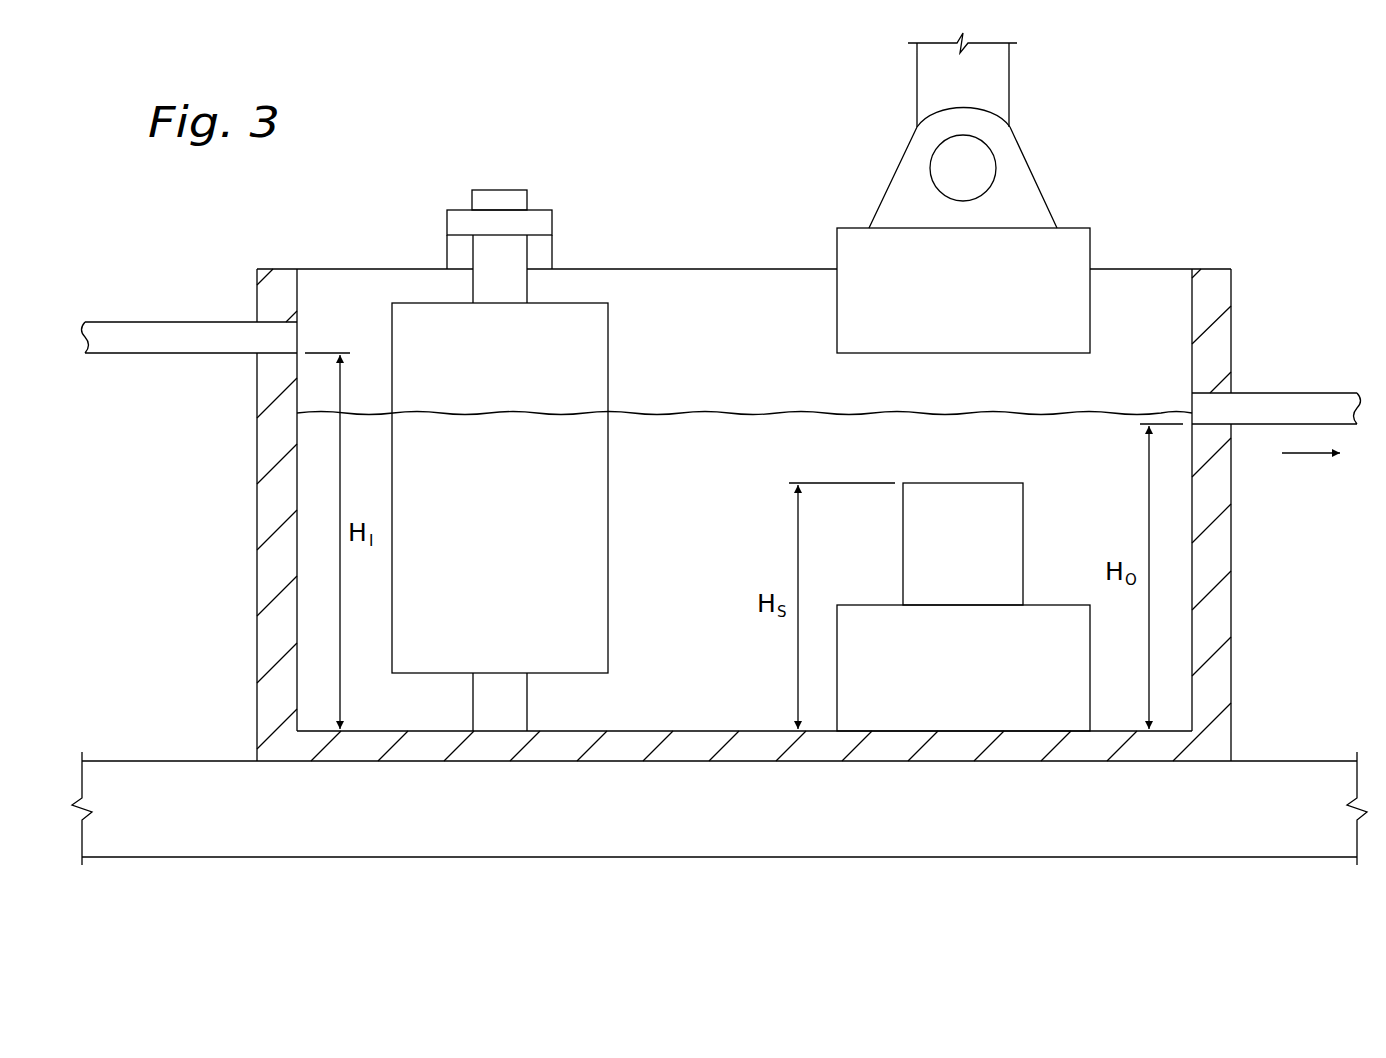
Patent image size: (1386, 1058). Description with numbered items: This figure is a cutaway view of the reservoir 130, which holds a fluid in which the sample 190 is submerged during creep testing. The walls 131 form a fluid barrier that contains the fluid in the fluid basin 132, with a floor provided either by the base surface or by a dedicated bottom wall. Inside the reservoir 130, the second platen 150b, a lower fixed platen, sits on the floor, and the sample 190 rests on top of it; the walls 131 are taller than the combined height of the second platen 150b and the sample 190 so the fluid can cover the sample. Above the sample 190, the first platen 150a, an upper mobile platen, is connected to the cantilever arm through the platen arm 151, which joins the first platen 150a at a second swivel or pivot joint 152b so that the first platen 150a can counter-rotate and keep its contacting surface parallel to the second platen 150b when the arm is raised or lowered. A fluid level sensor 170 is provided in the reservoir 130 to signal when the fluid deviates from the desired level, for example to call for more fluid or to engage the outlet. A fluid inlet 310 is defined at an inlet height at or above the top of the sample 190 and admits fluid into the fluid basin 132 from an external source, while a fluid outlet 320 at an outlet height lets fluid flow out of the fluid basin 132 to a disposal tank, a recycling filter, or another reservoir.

The reservoir 130 is at (322, 231).
The walls 131 is at (257, 595).
The fluid basin 132 is at (675, 338).
The fluid inlet 310 is at (297, 337).
The fluid outlet 320 is at (1192, 404).
The fluid level sensor 170 is at (610, 614).
The platen arm 151 is at (1012, 78).
The second swivel or pivot joint 152b is at (977, 167).
The first platen 150a is at (848, 228).
The second platen 150b is at (973, 616).
The sample 190 is at (915, 548).